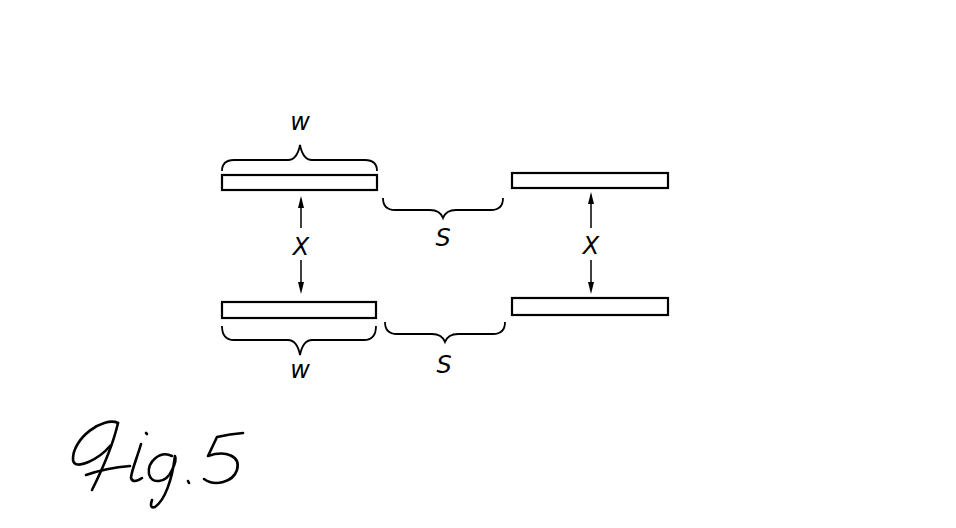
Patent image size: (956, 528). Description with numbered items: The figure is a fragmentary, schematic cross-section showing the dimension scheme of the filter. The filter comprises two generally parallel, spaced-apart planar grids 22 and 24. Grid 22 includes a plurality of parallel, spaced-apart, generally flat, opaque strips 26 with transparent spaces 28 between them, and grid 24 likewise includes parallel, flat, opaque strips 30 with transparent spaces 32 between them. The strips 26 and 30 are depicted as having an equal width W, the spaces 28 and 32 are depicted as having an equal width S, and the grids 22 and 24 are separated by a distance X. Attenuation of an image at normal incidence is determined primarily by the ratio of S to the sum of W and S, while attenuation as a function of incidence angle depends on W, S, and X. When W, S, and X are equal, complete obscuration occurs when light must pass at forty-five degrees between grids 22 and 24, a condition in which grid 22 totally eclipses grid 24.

The grid 22 is at (737, 303).
The grid 24 is at (737, 180).
The opaque strips 26 is at (248, 302).
The transparent spaces 28 is at (450, 302).
The opaque strips 30 is at (245, 175).
The transparent spaces 32 is at (447, 180).